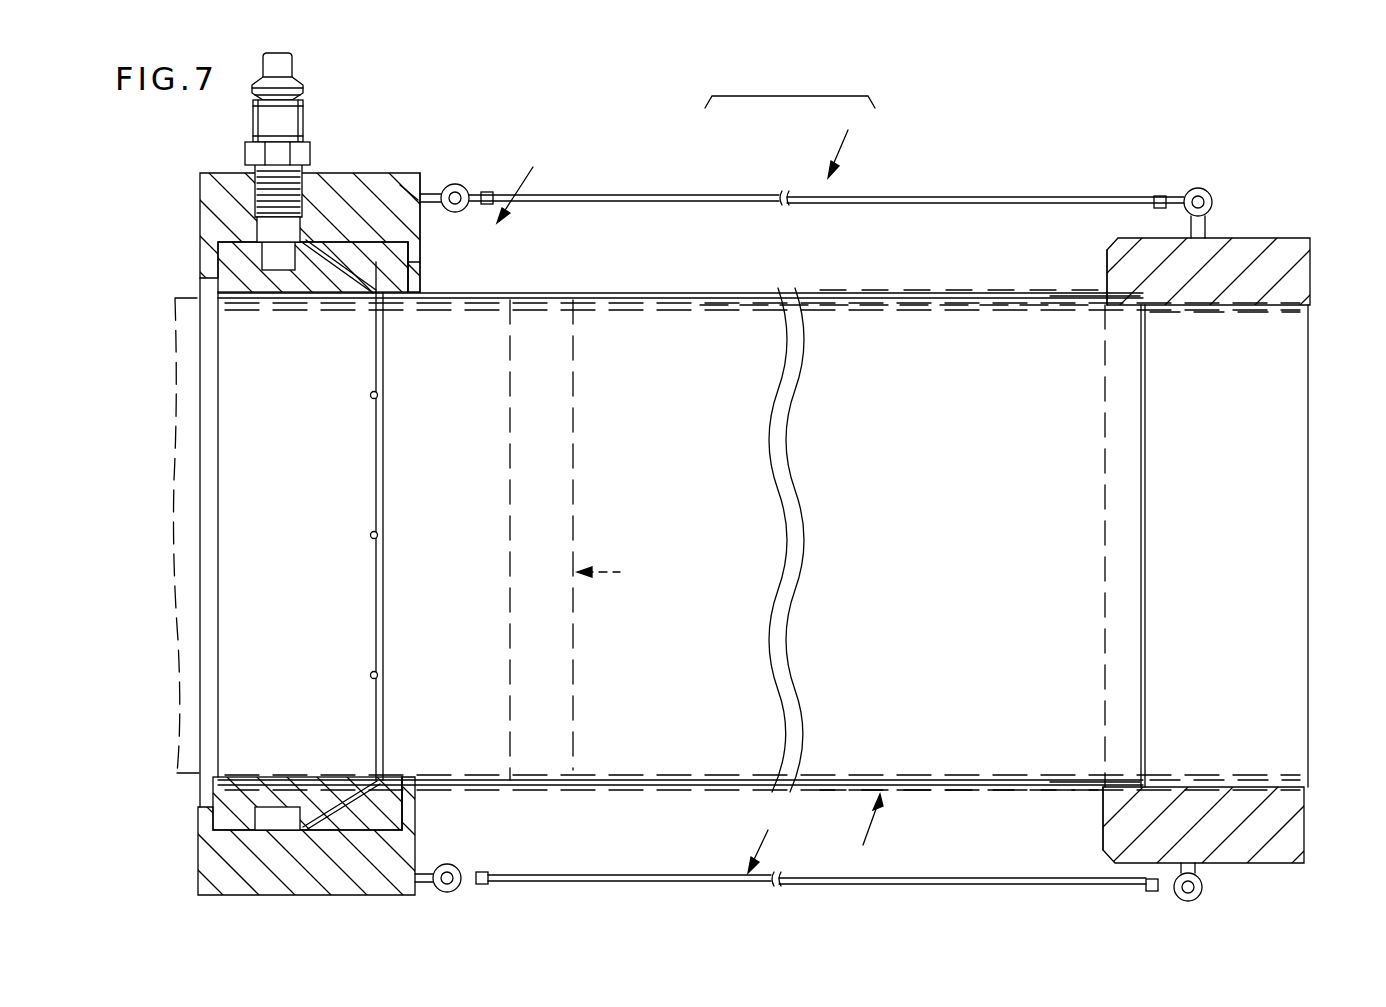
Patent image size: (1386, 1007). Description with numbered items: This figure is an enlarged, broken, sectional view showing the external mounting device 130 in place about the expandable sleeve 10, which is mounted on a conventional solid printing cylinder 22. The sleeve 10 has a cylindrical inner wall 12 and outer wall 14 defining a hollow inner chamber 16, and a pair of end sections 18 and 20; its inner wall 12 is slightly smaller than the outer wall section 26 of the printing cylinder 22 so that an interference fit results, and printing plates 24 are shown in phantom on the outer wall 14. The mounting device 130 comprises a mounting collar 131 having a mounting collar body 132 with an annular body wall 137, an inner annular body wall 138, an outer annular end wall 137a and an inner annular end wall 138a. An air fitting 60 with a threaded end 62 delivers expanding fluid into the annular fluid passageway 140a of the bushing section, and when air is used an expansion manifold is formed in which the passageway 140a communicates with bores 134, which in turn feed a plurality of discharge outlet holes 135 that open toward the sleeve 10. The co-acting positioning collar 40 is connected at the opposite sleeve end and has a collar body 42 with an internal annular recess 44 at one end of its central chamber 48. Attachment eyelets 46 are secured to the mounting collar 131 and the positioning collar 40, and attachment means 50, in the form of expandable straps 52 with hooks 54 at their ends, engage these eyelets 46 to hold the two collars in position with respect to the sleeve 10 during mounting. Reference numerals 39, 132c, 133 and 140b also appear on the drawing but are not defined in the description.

The expandable sleeve 10 is at (865, 832).
The inner wall 12 is at (1000, 305).
The outer wall 14 is at (1065, 295).
The hollow inner chamber 16 is at (759, 541).
The end section 18 is at (375, 455).
The end section 20 is at (1145, 445).
The printing cylinder 22 is at (581, 540).
The printing plates 24 is at (940, 292).
The outer wall section 26 is at (182, 796).
The flange face hidden line 39 is at (1222, 305).
The positioning collar 40 is at (1270, 238).
The collar body 42 is at (1310, 268).
The internal annular recess 44 is at (1135, 300).
The attachment eyelets 46 is at (455, 184).
The central chamber 48 is at (1253, 546).
The attachment means 50 is at (804, 491).
The expandable straps 52 is at (955, 196).
The hooks 54 is at (487, 192).
The air fitting 60 is at (300, 65).
The threaded end 62 is at (300, 158).
The external mounting device 130 is at (528, 183).
The mounting collar 131 is at (418, 250).
The mounting collar body 132 is at (345, 172).
The cap body portion 132c is at (394, 189).
The chamber 133 is at (254, 534).
The bores 134 is at (345, 242).
The discharge outlet holes 135 is at (372, 395).
The annular body wall 137 is at (320, 175).
The outer annular end wall 137a is at (200, 222).
The inner annular body wall 138 is at (310, 300).
The inner annular end wall 138a is at (422, 228).
The annular fluid passageway 140a is at (275, 270).
The stub end 140b is at (385, 300).